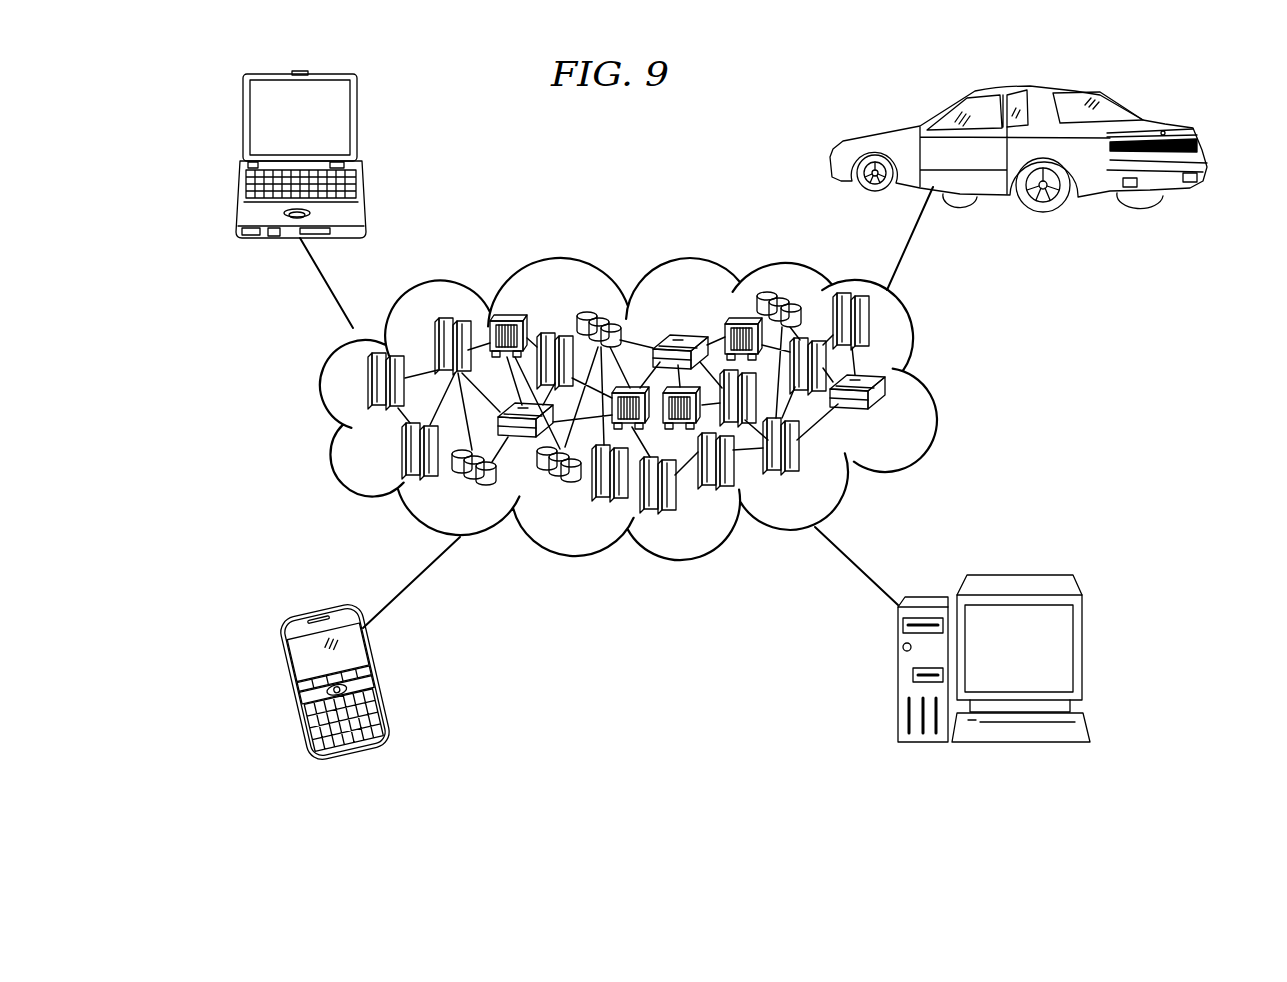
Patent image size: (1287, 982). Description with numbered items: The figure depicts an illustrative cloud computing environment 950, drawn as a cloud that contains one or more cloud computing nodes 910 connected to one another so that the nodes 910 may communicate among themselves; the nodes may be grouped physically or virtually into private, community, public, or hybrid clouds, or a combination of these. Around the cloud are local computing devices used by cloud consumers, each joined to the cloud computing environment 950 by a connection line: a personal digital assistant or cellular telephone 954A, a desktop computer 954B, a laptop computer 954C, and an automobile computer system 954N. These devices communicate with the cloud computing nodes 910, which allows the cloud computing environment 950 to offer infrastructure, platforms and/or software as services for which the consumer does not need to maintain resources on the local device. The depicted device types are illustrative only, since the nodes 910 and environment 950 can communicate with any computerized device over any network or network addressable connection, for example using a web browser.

The cloud computing nodes 910 is at (895, 416).
The cloud computing environment 950 is at (930, 341).
The personal digital assistant (PDA) or cellular telephone 954A is at (289, 668).
The desktop computer 954B is at (1020, 573).
The laptop computer 954C is at (241, 112).
The automobile computer system 954N is at (1172, 121).